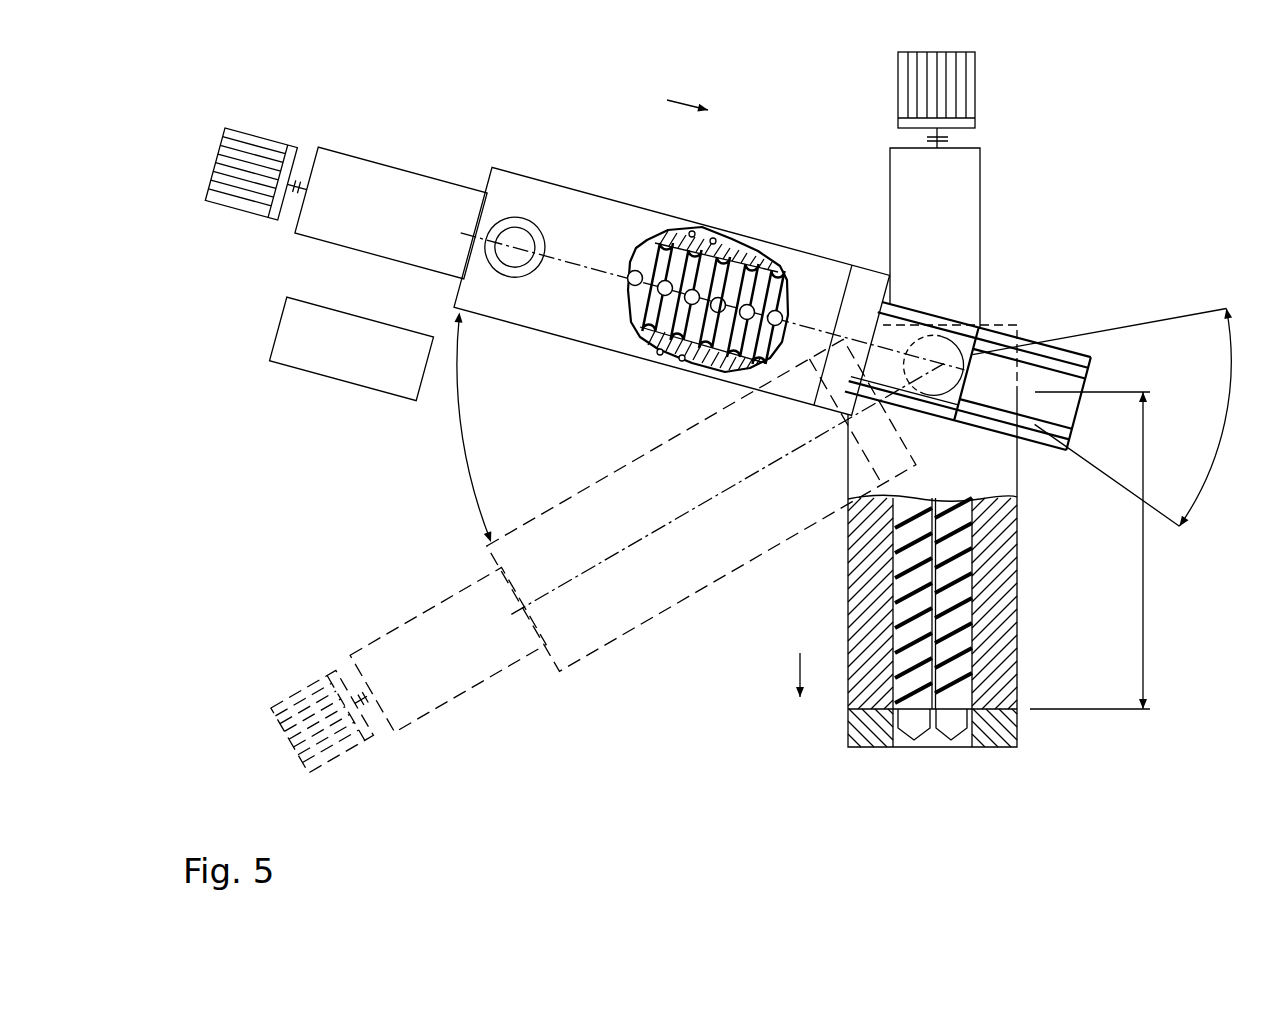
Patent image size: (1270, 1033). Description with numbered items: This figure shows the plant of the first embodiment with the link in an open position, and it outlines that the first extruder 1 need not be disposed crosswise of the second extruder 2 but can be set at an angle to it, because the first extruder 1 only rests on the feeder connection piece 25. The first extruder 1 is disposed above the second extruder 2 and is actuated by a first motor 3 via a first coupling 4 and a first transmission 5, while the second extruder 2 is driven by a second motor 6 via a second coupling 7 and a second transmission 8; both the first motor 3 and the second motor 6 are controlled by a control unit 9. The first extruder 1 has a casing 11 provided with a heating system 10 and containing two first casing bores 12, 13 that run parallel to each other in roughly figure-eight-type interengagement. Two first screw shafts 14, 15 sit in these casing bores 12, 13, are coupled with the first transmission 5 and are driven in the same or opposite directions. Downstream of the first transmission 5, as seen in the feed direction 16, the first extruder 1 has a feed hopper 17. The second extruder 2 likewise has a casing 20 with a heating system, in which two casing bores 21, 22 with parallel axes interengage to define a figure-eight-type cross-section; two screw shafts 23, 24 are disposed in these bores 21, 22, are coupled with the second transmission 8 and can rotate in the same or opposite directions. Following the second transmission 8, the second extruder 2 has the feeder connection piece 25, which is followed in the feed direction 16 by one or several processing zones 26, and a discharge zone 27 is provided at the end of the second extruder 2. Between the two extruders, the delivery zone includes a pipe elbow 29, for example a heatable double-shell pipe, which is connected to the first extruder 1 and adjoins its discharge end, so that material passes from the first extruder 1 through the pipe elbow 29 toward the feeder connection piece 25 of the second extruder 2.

The first extruder 1 is at (605, 190).
The second extruder 2 is at (949, 546).
The first motor 3 is at (262, 142).
The first coupling 4 is at (300, 178).
The first transmission 5 is at (392, 177).
The second motor 6 is at (975, 90).
The second coupling 7 is at (948, 138).
The second transmission 8 is at (970, 207).
The control unit 9 is at (275, 323).
The heating system 10 is at (690, 232).
The casing 11 is at (712, 238).
The first casing bore 12 is at (663, 363).
The first casing bore 13 is at (760, 268).
The first screw shaft 14 is at (642, 312).
The first screw shaft 15 is at (717, 277).
The feed direction 16 is at (683, 98).
The feed hopper 17 is at (517, 237).
The casing 20 is at (1010, 662).
The casing bore 21 is at (897, 592).
The casing bore 22 is at (970, 650).
The screw shaft 23 is at (912, 637).
The screw shaft 24 is at (957, 568).
The feeder connection piece 25 is at (933, 348).
The processing zones 26 is at (1103, 509).
The discharge zone 27 is at (960, 742).
The pipe elbow 29 is at (972, 348).